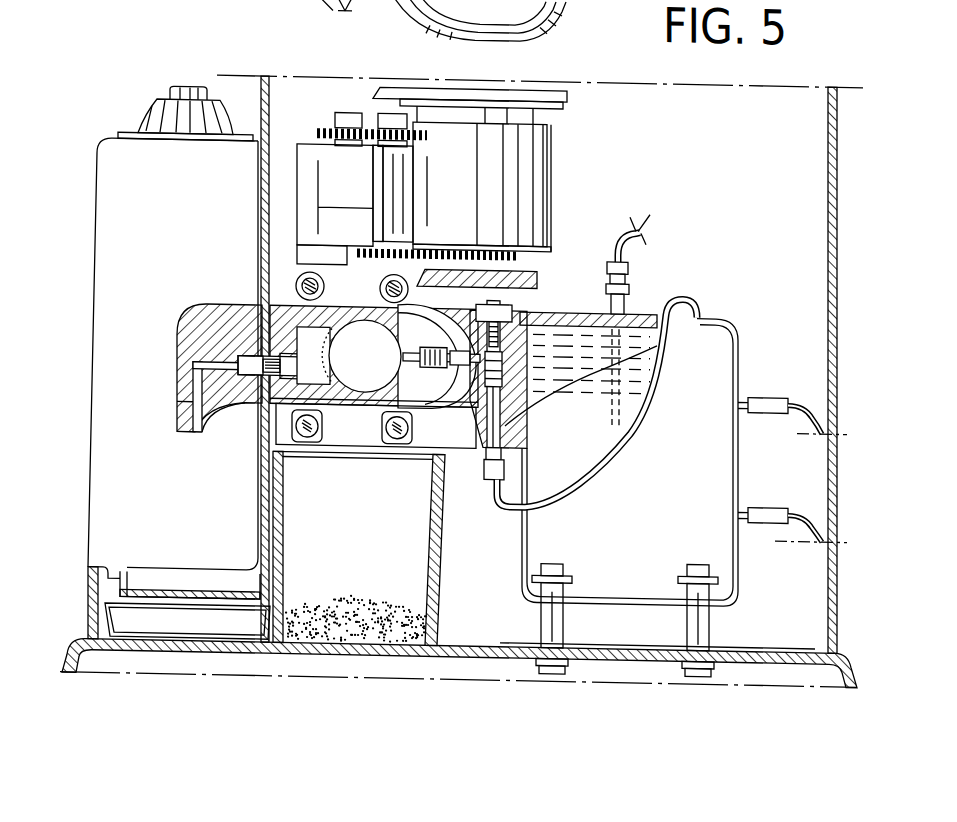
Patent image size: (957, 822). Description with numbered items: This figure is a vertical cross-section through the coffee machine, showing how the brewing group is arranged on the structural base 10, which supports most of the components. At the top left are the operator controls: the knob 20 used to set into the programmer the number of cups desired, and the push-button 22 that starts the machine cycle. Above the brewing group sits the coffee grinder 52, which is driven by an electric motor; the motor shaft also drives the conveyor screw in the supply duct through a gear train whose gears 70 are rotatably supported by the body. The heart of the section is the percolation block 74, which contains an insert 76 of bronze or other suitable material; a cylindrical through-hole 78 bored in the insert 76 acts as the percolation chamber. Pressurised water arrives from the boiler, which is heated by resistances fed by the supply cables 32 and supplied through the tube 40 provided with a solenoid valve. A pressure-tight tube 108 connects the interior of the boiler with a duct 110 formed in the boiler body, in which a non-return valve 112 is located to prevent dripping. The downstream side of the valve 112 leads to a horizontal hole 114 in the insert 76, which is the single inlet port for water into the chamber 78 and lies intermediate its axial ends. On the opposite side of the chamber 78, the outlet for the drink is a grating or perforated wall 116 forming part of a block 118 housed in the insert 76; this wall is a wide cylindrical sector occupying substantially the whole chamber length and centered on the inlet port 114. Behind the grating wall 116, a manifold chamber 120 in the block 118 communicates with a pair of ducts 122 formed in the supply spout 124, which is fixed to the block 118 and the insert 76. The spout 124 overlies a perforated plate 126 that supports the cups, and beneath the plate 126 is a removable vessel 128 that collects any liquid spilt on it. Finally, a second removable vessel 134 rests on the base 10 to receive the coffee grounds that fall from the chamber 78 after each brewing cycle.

The structural base 10 is at (738, 644).
The knob 20 is at (152, 125).
The push-button 22 is at (187, 93).
The supply cables 32 is at (790, 502).
The tube 40 is at (630, 226).
The coffee grinder 52 is at (560, 166).
The gears 70 is at (470, 238).
The percolation block 74 is at (420, 434).
The insert 76 is at (296, 284).
The cylindrical through-hole 78 is at (360, 392).
The pressure-tight tube 108 is at (638, 437).
The duct 110 is at (520, 405).
The non-return valve 112 is at (560, 316).
The horizontal hole 114 is at (424, 400).
The grating or perforated wall 116 is at (343, 404).
The block 118 is at (240, 365).
The manifold chamber 120 is at (237, 414).
The ducts 122 is at (180, 405).
The supply spout 124 is at (203, 313).
The perforated plate 126 is at (160, 594).
The removable vessel 128 is at (195, 622).
The removable vessel 134 is at (445, 578).